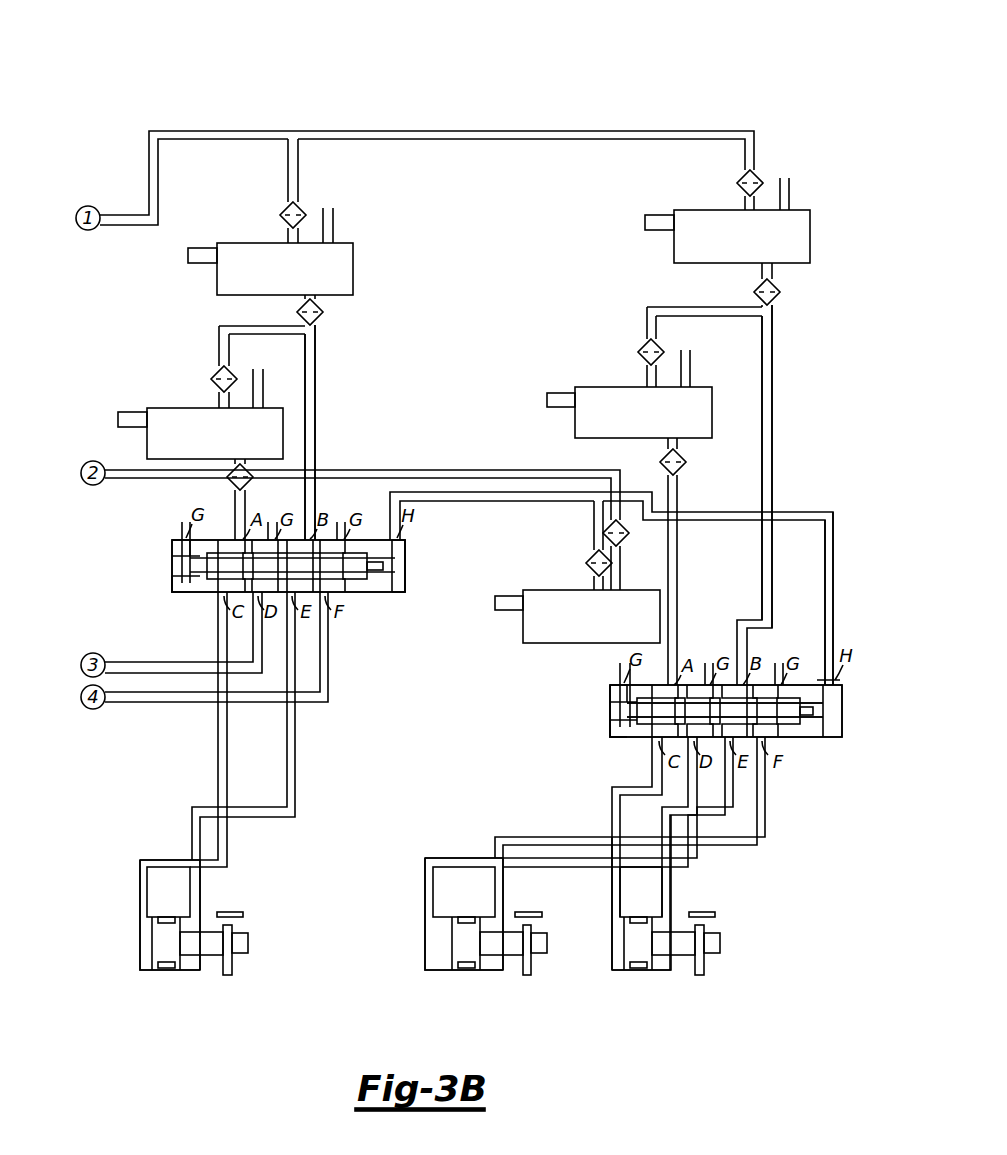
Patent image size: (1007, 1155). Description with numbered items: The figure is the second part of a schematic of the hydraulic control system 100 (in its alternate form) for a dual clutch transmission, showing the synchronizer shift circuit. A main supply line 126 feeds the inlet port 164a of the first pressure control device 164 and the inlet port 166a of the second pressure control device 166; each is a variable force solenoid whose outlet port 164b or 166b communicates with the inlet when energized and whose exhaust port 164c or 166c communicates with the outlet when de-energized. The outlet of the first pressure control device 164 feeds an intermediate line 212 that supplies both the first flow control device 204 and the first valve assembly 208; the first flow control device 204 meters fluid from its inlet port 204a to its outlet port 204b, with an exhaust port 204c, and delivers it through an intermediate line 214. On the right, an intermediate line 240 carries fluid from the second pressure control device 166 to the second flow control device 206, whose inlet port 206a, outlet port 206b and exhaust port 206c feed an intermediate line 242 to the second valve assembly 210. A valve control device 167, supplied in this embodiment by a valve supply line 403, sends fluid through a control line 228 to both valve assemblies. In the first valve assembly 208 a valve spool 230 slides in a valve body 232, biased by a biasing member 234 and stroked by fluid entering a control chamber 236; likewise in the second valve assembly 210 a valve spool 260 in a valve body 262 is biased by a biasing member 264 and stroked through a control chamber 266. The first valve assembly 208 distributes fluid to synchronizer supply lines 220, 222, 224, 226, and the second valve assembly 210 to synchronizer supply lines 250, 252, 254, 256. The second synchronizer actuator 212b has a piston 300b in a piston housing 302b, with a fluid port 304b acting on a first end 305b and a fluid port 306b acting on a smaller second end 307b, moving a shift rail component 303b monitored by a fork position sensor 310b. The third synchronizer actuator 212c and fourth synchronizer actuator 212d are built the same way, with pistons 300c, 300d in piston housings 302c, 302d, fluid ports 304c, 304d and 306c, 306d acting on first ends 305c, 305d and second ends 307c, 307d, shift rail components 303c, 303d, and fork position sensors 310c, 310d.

The hydraulic control system 100 is at (735, 44).
The main supply line 126 is at (386, 131).
The first pressure control device 164 is at (217, 287).
The inlet port 164a is at (288, 241).
The outlet port 164b is at (320, 300).
The exhaust port 164c is at (335, 241).
The second pressure control device 166 is at (674, 252).
The inlet port 166a is at (746, 206).
The outlet port 166b is at (777, 272).
The exhaust port 166c is at (788, 205).
The first flow control device 204 is at (147, 448).
The inlet port 204a is at (219, 405).
The outlet port 204b is at (253, 478).
The exhaust port 204c is at (263, 406).
The second flow control device 206 is at (575, 429).
The inlet port 206a is at (645, 385).
The outlet port 206b is at (680, 443).
The exhaust port 206c is at (690, 380).
The valve control device 167 is at (523, 632).
The intermediate line 212 is at (315, 420).
The intermediate line 214 is at (237, 510).
The valve supply line 403 is at (439, 470).
The intermediate line 240 is at (772, 491).
The intermediate line 242 is at (677, 568).
The control line 228 is at (826, 559).
The biasing member 234 is at (172, 548).
The valve spool 230 is at (172, 583).
The control chamber 236 is at (405, 565).
The valve body 232 is at (380, 590).
The first valve assembly 208 is at (163, 595).
The synchronizer supply line 222 is at (181, 662).
The synchronizer supply line 226 is at (181, 703).
The synchronizer supply line 220 is at (227, 735).
The synchronizer supply line 224 is at (295, 777).
The control chamber 266 is at (611, 690).
The biasing member 264 is at (643, 711).
The valve body 262 is at (607, 725).
The valve spool 260 is at (842, 730).
The second valve assembly 210 is at (602, 746).
The synchronizer supply line 250 is at (612, 827).
The synchronizer supply line 254 is at (662, 828).
The synchronizer supply line 256 is at (765, 800).
The synchronizer supply line 252 is at (697, 858).
The piston 300b is at (174, 916).
The fluid port 304b is at (145, 915).
The fluid port 306b is at (197, 915).
The fork position sensor 310b is at (243, 915).
The first end 305b is at (140, 945).
The piston housing 302b is at (146, 972).
The second synchronizer actuator 212b is at (133, 978).
The second end 307b is at (188, 975).
The shift rail component 303b is at (227, 976).
The piston 300c is at (480, 915).
The fluid port 304c is at (430, 912).
The fluid port 306c is at (498, 912).
The fork position sensor 310c is at (542, 915).
The first end 305c is at (435, 945).
The piston housing 302c is at (435, 972).
The third synchronizer actuator 212c is at (418, 973).
The second end 307c is at (493, 974).
The shift rail component 303c is at (525, 977).
The piston 300d is at (645, 915).
The fluid port 304d is at (616, 912).
The fluid port 306d is at (665, 912).
The fork position sensor 310d is at (715, 915).
The first end 305d is at (613, 957).
The piston housing 302d is at (618, 972).
The fourth synchronizer actuator 212d is at (608, 976).
The second end 307d is at (665, 969).
The shift rail component 303d is at (701, 975).